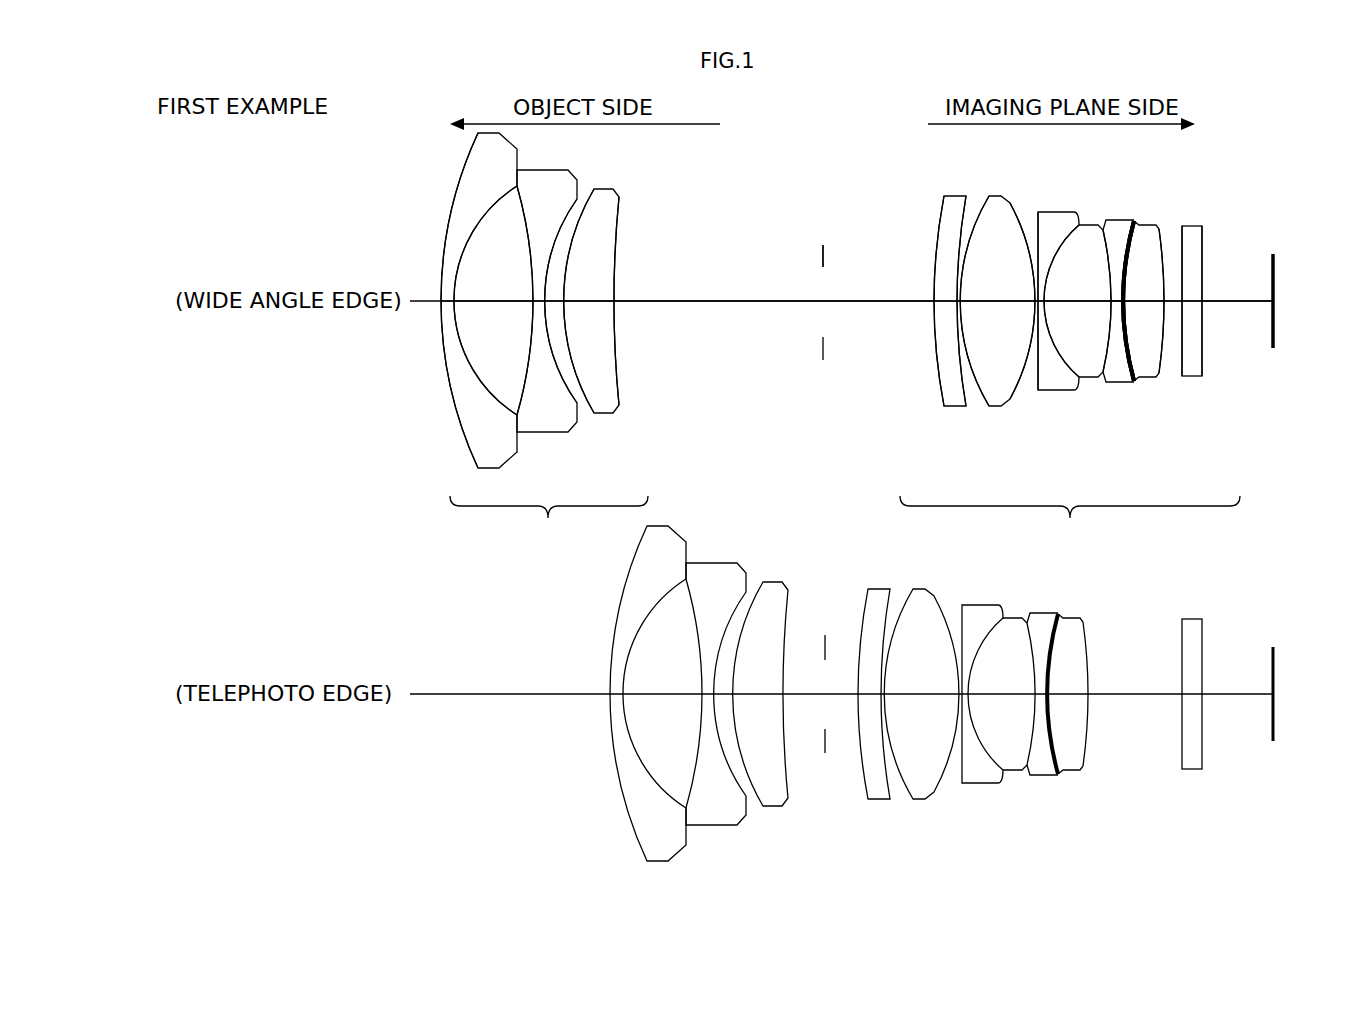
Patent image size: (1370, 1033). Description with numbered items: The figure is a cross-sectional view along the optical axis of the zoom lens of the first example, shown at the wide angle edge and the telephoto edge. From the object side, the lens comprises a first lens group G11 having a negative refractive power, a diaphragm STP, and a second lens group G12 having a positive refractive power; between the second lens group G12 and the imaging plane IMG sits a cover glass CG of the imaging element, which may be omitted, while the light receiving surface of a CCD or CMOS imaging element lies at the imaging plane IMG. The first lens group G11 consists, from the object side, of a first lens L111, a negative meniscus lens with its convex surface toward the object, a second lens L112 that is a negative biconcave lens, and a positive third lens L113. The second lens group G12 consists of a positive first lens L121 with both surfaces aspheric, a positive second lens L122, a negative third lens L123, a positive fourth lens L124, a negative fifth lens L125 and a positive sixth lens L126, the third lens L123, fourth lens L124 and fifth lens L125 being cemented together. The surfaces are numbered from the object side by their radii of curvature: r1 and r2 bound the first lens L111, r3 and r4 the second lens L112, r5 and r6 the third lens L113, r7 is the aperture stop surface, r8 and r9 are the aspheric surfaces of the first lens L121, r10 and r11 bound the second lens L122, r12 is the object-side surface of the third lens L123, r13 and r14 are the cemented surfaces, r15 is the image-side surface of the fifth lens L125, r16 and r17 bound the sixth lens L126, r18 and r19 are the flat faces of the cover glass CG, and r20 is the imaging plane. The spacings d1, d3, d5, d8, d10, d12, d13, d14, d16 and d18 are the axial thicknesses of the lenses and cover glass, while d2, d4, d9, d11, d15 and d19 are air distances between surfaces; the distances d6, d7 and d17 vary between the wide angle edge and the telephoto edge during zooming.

The first lens L111 is at (490, 455).
The second lens L112 is at (546, 420).
The third lens L113 is at (605, 398).
The first lens L121 is at (955, 398).
The second lens L122 is at (998, 397).
The third lens L123 is at (1055, 380).
The fourth lens L124 is at (1092, 365).
The fifth lens L125 is at (1113, 388).
The sixth lens L126 is at (1155, 373).
The first lens group G11 is at (615, 563).
The second lens group G12 is at (1010, 562).
The diaphragm STP is at (824, 248).
The cover glass CG is at (1190, 235).
The imaging plane IMG is at (1277, 282).
The radius of curvature r1 is at (441, 263).
The radius of curvature r2 is at (468, 237).
The radius of curvature r3 is at (532, 273).
The radius of curvature r4 is at (553, 245).
The radius of curvature r5 is at (588, 198).
The radius of curvature r6 is at (618, 247).
The aperture stop surface r7 is at (821, 253).
The radius of curvature r8 is at (933, 275).
The radius of curvature r9 is at (957, 247).
The radius of curvature r10 is at (975, 222).
The radius of curvature r11 is at (998, 196).
The radius of curvature r12 is at (1038, 212).
The radius of curvature r13 is at (1076, 224).
The radius of curvature r14 is at (1104, 230).
The radius of curvature r15 is at (1133, 220).
The radius of curvature r16 is at (1143, 232).
The radius of curvature r17 is at (1165, 243).
The radius of curvature r18 is at (1185, 280).
The radius of curvature r19 is at (1203, 248).
The imaging plane surface r20 is at (1266, 258).
The thickness d1 is at (448, 303).
The distance between surfaces d2 is at (495, 303).
The thickness d3 is at (538, 303).
The distance between surfaces d4 is at (553, 303).
The thickness d5 is at (587, 303).
The distance between surfaces d6 is at (725, 302).
The distance between surfaces d7 is at (863, 302).
The thickness d8 is at (945, 305).
The distance between surfaces d9 is at (958, 310).
The thickness d10 is at (975, 310).
The distance between surfaces d11 is at (1032, 308).
The thickness d12 is at (1037, 308).
The thickness d13 is at (1078, 305).
The thickness d14 is at (1118, 340).
The distance between surfaces d15 is at (1132, 312).
The thickness d16 is at (1163, 308).
The distance between surfaces d17 is at (1173, 303).
The thickness d18 is at (1188, 304).
The distance between surfaces d19 is at (1250, 303).